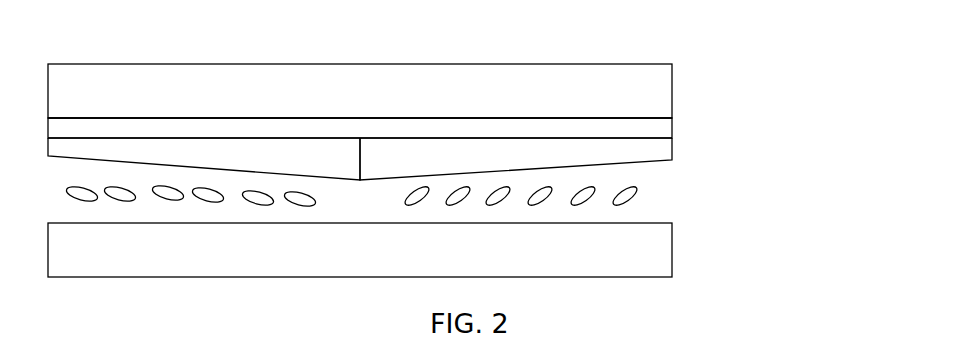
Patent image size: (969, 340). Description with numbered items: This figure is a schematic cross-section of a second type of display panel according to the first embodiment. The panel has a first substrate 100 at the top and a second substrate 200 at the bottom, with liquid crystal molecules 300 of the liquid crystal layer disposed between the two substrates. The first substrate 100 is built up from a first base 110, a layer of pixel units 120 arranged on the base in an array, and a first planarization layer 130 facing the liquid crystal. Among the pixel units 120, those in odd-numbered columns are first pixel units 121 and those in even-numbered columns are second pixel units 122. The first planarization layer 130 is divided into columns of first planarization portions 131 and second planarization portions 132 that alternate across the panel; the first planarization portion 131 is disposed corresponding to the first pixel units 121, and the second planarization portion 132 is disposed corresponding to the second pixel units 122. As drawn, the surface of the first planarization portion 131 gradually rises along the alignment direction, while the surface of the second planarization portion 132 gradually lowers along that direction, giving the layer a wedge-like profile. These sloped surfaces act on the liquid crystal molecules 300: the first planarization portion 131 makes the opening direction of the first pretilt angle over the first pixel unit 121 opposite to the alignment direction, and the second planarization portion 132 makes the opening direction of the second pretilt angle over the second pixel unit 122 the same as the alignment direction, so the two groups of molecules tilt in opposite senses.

The first substrate 100 is at (455, 90).
The first base 110 is at (655, 84).
The pixel units 120 is at (411, 79).
The first pixel units 121 is at (185, 130).
The second pixel units 122 is at (518, 130).
The first planarization layer 130 is at (411, 90).
The first planarization portion 131 is at (293, 157).
The second planarization portion 132 is at (432, 147).
The second substrate 200 is at (643, 252).
The liquid crystal molecules 300 is at (630, 192).